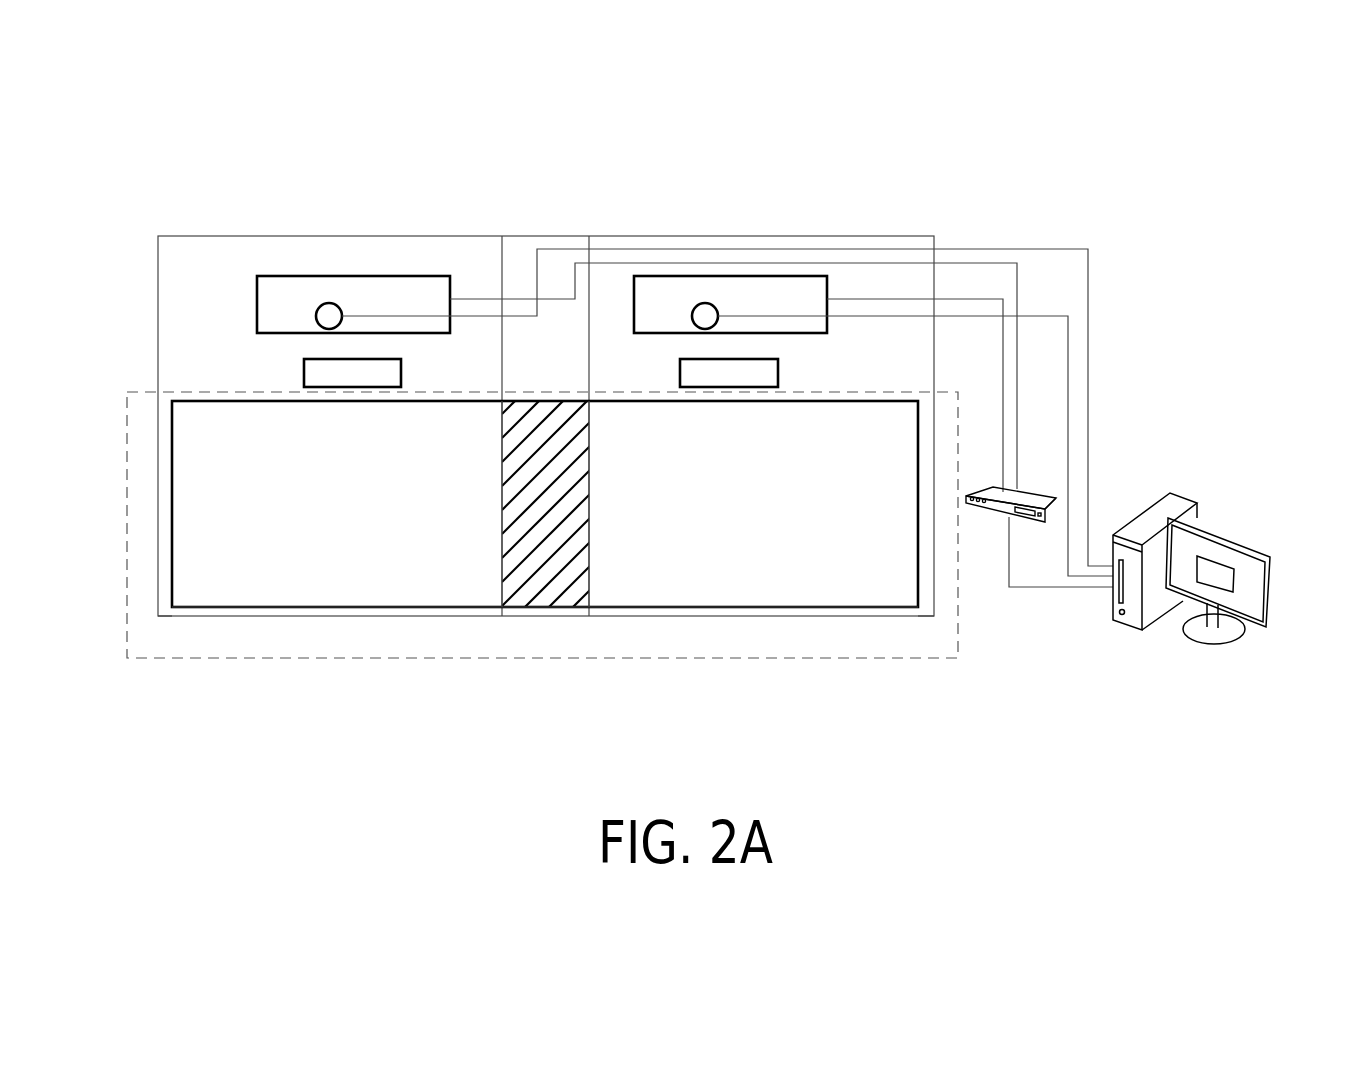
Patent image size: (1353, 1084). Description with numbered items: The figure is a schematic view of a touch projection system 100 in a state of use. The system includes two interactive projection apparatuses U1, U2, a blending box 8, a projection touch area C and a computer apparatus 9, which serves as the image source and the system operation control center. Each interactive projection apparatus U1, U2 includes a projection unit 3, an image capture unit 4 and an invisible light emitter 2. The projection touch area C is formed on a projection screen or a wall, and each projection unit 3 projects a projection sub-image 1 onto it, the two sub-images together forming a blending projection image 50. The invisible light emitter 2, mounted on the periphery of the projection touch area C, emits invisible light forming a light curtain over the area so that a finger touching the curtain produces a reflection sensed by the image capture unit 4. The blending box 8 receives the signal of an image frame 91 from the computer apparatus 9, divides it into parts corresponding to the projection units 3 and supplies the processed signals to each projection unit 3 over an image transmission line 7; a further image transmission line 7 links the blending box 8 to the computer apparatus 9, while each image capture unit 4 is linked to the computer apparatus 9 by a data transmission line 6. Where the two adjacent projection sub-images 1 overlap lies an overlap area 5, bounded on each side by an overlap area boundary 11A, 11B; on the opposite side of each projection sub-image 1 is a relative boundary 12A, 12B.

The touch projection system 100 is at (1205, 245).
The interactive projection apparatus U1 is at (330, 236).
The interactive projection apparatus U2 is at (710, 236).
The projection sub-image 1 is at (787, 590).
The invisible light emitter 2 is at (401, 371).
The projection unit 3 is at (403, 275).
The image capture unit 4 is at (326, 313).
The overlap area 5 is at (542, 597).
The data transmission line 6 is at (467, 315).
The image transmission line 7 is at (518, 298).
The blending box 8 is at (990, 512).
The computer apparatus 9 is at (1248, 562).
The image frame 91 is at (1225, 578).
The blending projection image 50 is at (720, 608).
The overlap area boundary 11A is at (590, 608).
The overlap area boundary 11B is at (501, 608).
The relative boundary 12A is at (167, 616).
The relative boundary 12B is at (925, 616).
The projection touch area C is at (842, 658).